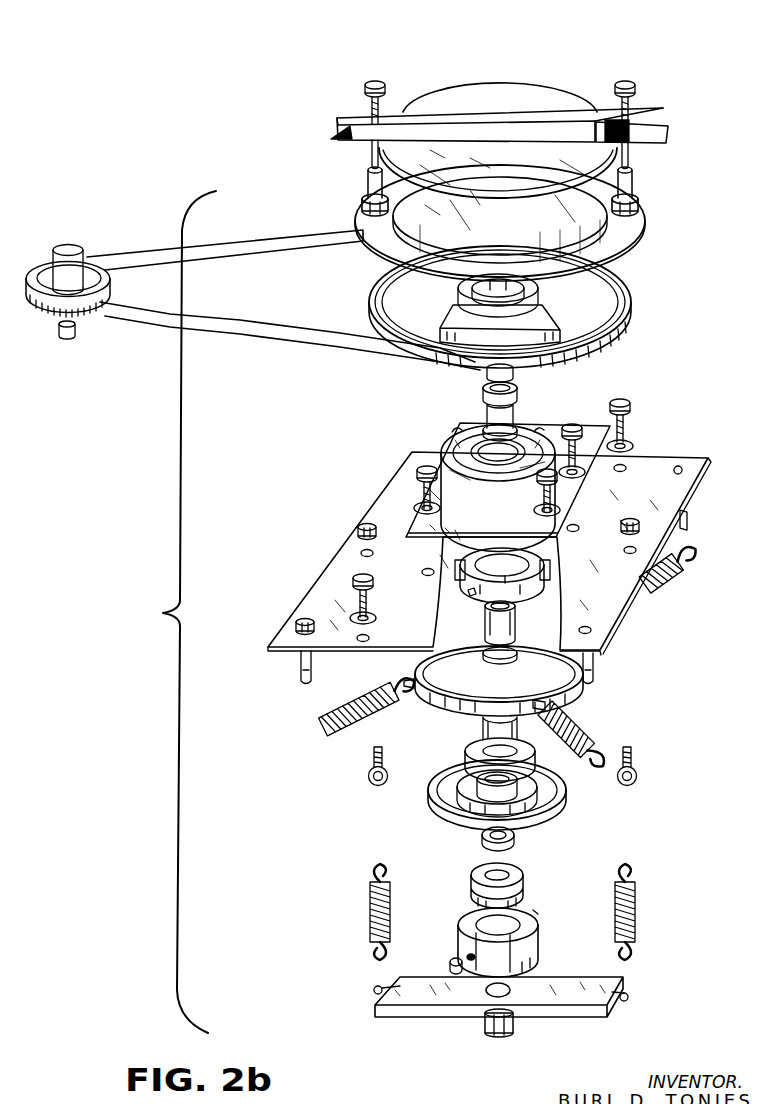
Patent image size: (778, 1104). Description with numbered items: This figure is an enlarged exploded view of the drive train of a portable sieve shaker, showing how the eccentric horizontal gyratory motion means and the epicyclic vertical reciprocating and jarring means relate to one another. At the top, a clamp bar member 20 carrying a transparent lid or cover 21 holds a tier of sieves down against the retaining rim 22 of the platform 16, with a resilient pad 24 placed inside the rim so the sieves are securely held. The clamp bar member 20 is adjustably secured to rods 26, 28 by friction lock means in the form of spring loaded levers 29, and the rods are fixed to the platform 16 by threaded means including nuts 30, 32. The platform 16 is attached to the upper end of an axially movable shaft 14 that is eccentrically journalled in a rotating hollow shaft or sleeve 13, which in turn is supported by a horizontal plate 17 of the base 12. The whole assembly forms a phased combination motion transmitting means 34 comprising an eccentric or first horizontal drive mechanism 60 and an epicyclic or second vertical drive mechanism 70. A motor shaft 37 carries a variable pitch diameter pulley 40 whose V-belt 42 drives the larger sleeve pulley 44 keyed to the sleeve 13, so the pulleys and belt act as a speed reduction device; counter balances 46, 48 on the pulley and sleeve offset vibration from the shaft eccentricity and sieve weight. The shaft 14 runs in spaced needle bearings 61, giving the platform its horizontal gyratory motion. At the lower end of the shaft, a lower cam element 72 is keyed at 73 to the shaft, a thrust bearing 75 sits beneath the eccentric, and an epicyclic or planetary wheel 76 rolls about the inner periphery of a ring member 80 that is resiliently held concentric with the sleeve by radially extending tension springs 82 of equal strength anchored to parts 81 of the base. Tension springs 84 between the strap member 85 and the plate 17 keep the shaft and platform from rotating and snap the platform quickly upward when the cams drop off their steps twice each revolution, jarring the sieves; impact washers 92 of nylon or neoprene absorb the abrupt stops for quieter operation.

The base 12 is at (502, 521).
The hollow shaft or sleeve 13 is at (520, 438).
The axially movable shaft 14 is at (500, 288).
The platform 16 is at (625, 247).
The horizontal plate 17 is at (607, 615).
The clamp bar member 20 is at (548, 112).
The transparent lid or cover 21 is at (474, 92).
The retaining rim 22 is at (420, 218).
The resilient pad 24 is at (501, 232).
The rod 26 is at (368, 105).
The rod 28 is at (627, 106).
The spring loaded lever 29 is at (334, 136).
The nut 30 is at (360, 204).
The nut 32 is at (640, 206).
The phased combination motion transmitting means 34 is at (170, 612).
The motor shaft 37 is at (60, 330).
The variable pitch diameter pulley 40 is at (53, 248).
The V-belt 42 is at (232, 330).
The sleeve pulley 44 is at (401, 302).
The counter balance 46 is at (560, 347).
The counter balance 48 is at (553, 560).
The eccentric or first horizontal drive mechanism 60 is at (383, 427).
The needle bearing 61 is at (480, 413).
The epicyclic or second vertical drive mechanism 70 is at (487, 696).
The lower cam element 72 is at (540, 940).
The key 73 is at (457, 958).
The thrust bearing 75 is at (470, 747).
The epicyclic or planetary wheel 76 is at (477, 823).
The ring member 80 is at (457, 707).
The base part 81 is at (297, 668).
The tension spring 82 is at (370, 686).
The tension spring 84 is at (370, 908).
The strap member 85 is at (563, 1010).
The impact washer 92 is at (520, 884).